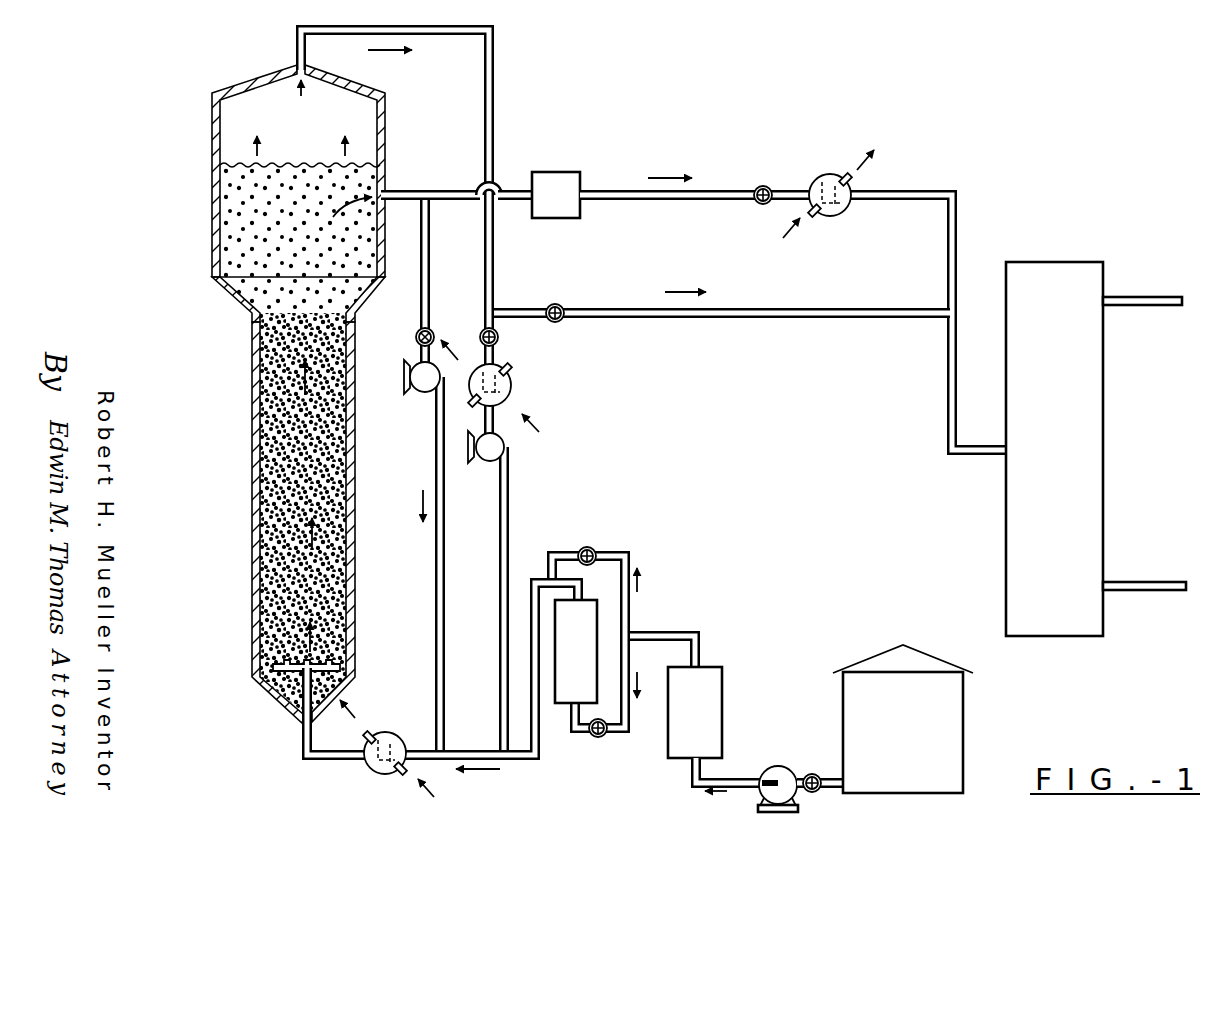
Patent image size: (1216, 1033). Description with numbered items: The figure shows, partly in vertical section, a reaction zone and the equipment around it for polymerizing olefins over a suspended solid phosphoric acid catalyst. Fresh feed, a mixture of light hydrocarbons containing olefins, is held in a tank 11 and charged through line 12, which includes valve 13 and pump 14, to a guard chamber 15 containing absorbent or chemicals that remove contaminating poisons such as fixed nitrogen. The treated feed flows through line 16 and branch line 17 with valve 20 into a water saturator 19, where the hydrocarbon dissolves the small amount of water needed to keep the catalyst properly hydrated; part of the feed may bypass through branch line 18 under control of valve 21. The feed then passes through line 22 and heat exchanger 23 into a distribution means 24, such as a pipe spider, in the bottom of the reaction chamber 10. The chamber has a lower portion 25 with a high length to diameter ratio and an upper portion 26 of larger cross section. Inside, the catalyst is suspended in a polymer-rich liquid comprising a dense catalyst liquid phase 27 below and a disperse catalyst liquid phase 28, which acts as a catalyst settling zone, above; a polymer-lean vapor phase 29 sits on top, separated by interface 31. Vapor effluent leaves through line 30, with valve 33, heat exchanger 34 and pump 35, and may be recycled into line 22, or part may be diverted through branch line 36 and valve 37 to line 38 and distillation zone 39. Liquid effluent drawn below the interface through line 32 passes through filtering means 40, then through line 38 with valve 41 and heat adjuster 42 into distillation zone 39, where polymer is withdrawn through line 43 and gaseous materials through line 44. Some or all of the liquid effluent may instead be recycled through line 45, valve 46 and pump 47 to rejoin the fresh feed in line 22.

The reaction chamber 10 is at (224, 394).
The tank 11 is at (964, 722).
The line 12 is at (830, 789).
The valve 13 is at (820, 778).
The pump 14 is at (762, 803).
The guard chamber 15 is at (722, 668).
The line 16 is at (647, 630).
The branch line 17 is at (618, 702).
The branch line 18 is at (609, 572).
The water saturator 19 is at (715, 608).
The valve 20 is at (606, 738).
The valve 21 is at (578, 545).
The line 22 is at (442, 690).
The heat exchanger 23 is at (370, 764).
The distribution means 24 is at (343, 688).
The lower portion 25 is at (252, 609).
The upper portion 26 is at (387, 128).
The dense catalyst liquid phase 27 is at (262, 366).
The disperse catalyst liquid phase 28 is at (245, 213).
The vapor phase 29 is at (238, 121).
The line 30 is at (399, 390).
The interface 31 is at (165, 161).
The line 32 is at (387, 191).
The valve 33 is at (498, 337).
The heat exchanger 34 is at (512, 374).
The pump 35 is at (507, 447).
The branch line 36 is at (722, 313).
The valve 37 is at (562, 304).
The line 38 is at (793, 298).
The distillation zone 39 is at (1003, 445).
The filtering means 40 is at (570, 220).
The valve 41 is at (756, 201).
The heat adjuster 42 is at (822, 174).
The line 43 is at (1172, 580).
The line 44 is at (1108, 280).
The line 45 is at (412, 475).
The valve 46 is at (431, 322).
The pump 47 is at (404, 380).